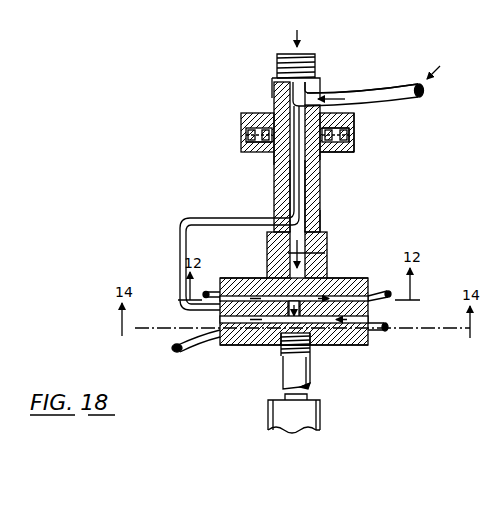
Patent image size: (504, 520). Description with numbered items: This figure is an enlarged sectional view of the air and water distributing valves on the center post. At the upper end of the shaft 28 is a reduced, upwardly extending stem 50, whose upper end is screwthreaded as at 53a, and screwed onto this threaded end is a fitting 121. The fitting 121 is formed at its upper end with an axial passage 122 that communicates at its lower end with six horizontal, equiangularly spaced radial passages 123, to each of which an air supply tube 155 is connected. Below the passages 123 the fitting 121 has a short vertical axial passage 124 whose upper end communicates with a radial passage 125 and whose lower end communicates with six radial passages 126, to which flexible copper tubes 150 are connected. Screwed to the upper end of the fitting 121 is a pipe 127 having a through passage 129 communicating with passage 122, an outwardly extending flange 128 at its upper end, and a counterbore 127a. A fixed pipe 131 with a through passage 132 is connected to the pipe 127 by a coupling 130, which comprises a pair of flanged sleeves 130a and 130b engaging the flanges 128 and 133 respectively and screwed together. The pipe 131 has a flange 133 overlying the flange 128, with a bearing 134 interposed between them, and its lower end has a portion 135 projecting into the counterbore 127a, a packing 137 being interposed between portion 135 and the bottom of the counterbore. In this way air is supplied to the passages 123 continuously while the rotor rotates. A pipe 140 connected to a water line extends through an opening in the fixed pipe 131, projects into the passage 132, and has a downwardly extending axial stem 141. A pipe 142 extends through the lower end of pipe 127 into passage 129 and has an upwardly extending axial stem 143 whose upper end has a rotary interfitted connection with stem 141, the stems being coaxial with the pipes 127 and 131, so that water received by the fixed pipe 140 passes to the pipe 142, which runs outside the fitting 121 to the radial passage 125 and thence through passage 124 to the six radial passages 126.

The fixed pipe 131 is at (266, 86).
The portion 135 is at (280, 127).
The pipe 140 is at (332, 98).
The through passage 132 is at (362, 73).
The coupling 130 is at (227, 125).
The counterbore 127a is at (248, 141).
The flange 133 is at (356, 121).
The bearing 134 is at (356, 137).
The flanged sleeve 130b is at (381, 119).
The flanged sleeve 130a is at (356, 153).
The flange 128 is at (336, 157).
The packing 137 is at (276, 158).
The axial stem 141 is at (291, 173).
The axial stem 143 is at (295, 202).
The through passage 129 is at (299, 218).
The pipe 127 is at (318, 224).
The pipe 142 is at (253, 218).
The fitting 121 is at (343, 260).
The axial passage 122 is at (300, 283).
The air supply tube 155 is at (210, 290).
The radial passages 123 is at (247, 268).
The vertical axial passage 124 is at (370, 321).
The radial passage 125 is at (218, 321).
The flexible copper tubes 150 is at (408, 337).
The radial passages 126 is at (370, 338).
The screwthreaded end 53a is at (308, 348).
The stem 50 is at (287, 380).
The shaft 28 is at (308, 410).